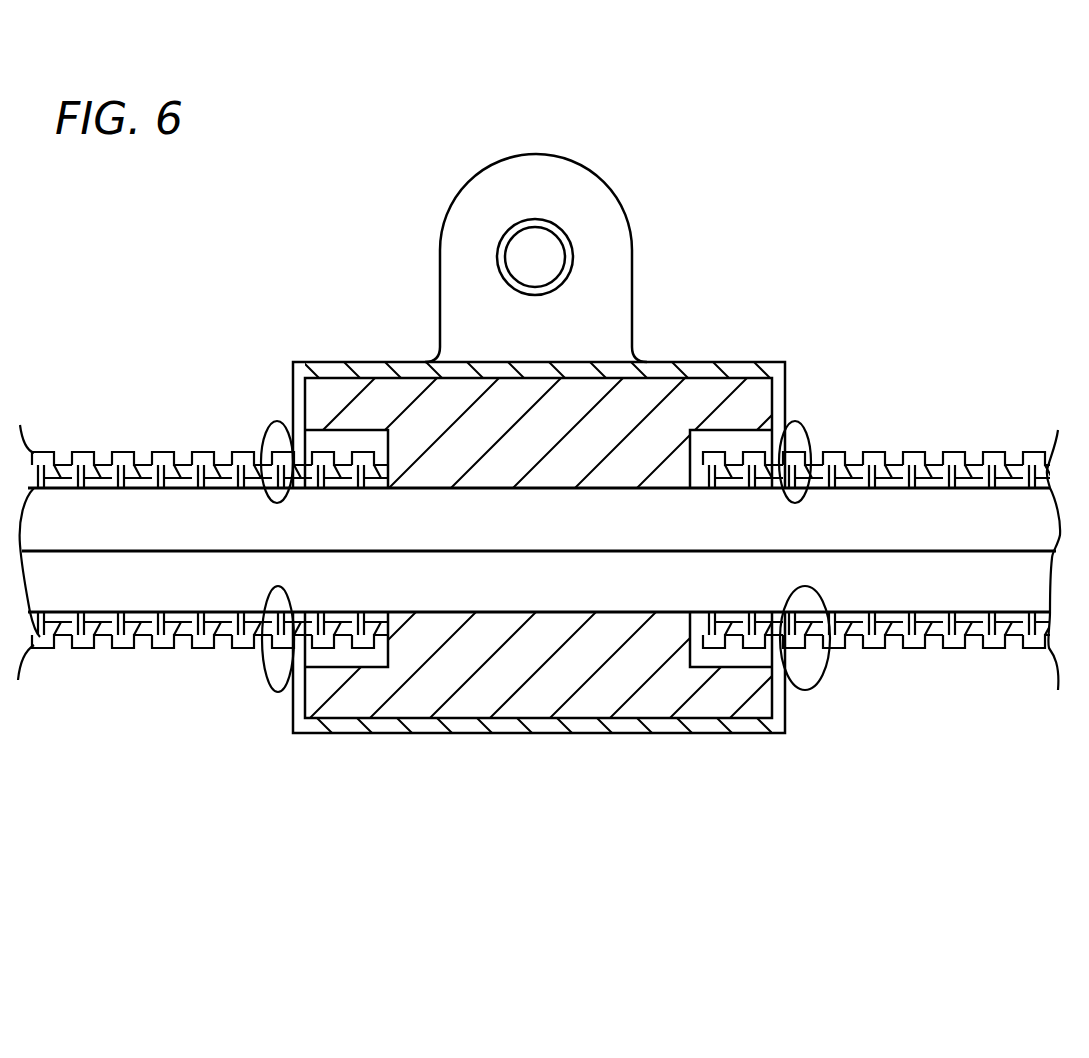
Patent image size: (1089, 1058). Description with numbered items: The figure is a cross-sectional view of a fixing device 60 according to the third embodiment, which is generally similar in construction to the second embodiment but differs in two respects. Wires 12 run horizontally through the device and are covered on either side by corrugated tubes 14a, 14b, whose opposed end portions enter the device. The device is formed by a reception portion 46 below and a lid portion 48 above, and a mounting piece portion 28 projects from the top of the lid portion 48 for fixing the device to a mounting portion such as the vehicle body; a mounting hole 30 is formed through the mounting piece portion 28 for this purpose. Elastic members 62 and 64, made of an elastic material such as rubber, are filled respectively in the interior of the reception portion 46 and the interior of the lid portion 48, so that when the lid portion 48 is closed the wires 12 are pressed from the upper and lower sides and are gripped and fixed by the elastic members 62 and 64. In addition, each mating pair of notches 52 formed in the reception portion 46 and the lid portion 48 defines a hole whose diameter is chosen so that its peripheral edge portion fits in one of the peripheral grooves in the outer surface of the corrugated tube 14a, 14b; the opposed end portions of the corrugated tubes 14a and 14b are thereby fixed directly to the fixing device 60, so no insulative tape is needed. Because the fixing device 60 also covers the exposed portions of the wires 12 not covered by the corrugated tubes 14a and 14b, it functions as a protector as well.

The wires 12 is at (183, 513).
The corrugated tube 14a is at (131, 452).
The corrugated tube 14b is at (917, 452).
The mounting piece portion 28 is at (634, 242).
The mounting hole 30 is at (541, 250).
The reception portion 46 is at (640, 735).
The lid portion 48 is at (338, 372).
The notches 52 is at (263, 440).
The fixing device 60 is at (513, 731).
The elastic member 62 is at (548, 678).
The elastic member 64 is at (645, 374).